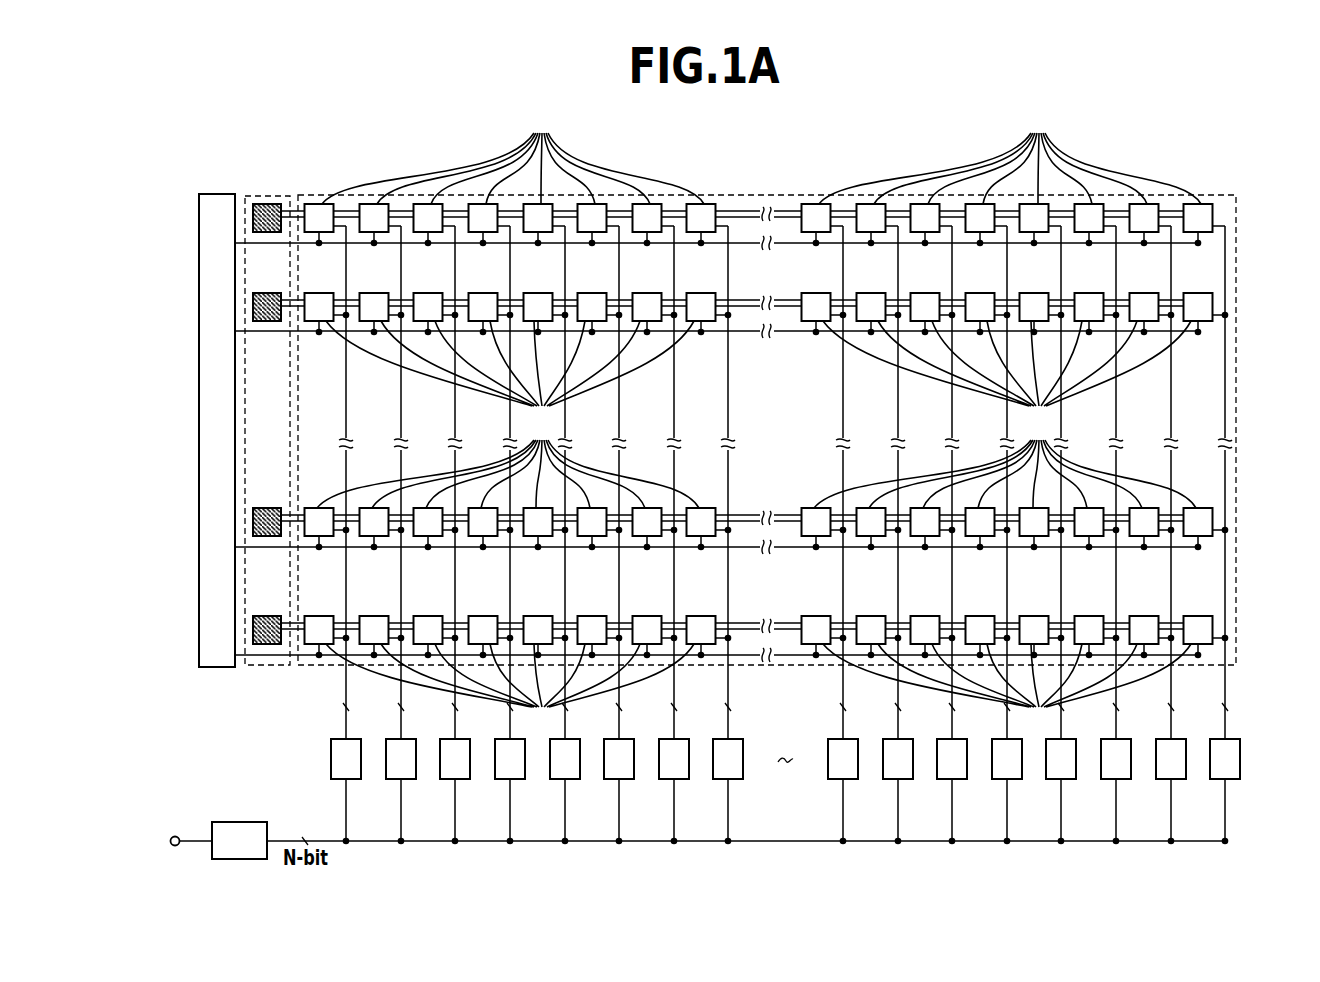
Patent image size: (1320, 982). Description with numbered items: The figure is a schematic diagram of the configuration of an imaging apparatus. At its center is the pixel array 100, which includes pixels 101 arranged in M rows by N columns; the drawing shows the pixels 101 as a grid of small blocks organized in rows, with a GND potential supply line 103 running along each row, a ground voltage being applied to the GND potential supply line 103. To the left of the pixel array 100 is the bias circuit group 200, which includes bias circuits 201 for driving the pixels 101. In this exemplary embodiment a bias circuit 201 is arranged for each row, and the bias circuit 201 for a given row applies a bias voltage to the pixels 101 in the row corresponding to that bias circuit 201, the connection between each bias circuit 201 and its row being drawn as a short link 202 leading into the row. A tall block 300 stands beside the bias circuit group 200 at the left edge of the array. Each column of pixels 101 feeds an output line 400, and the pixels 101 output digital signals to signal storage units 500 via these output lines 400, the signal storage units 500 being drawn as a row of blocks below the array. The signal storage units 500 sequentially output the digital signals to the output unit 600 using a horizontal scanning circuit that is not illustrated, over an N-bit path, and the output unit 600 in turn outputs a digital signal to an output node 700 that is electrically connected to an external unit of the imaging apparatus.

The pixel array 100 is at (718, 195).
The pixel 101 is at (322, 204).
The GND potential supply line 103 is at (750, 211).
The bias circuit group 200 is at (258, 196).
The bias circuit 201 is at (268, 204).
The connection line 202 is at (295, 218).
The vertical scanning circuit 300 is at (222, 194).
The output line 400 is at (345, 688).
The signal storage unit 500 is at (770, 780).
The output unit 600 is at (238, 822).
The output node 700 is at (175, 836).